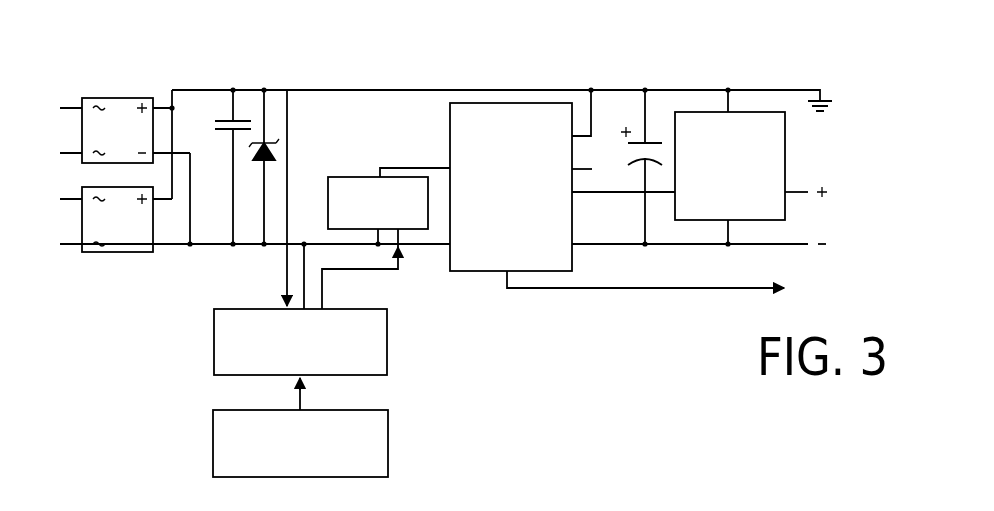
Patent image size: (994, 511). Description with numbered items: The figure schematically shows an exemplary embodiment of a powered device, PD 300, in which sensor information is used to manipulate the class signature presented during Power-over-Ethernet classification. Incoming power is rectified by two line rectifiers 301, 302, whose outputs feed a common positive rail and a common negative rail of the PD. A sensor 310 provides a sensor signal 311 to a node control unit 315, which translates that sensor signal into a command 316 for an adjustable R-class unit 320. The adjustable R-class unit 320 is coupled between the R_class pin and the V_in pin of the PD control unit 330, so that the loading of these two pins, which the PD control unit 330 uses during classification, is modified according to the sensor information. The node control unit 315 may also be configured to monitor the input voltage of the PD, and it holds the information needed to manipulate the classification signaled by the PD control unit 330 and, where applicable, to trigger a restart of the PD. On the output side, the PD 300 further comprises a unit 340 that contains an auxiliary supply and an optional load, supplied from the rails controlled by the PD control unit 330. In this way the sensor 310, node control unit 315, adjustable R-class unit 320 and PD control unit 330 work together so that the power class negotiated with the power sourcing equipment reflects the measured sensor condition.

The powered device 300 is at (298, 63).
The line rectifier 301 is at (108, 98).
The line rectifier 302 is at (110, 255).
The sensor 310 is at (388, 443).
The sensor signal 311 is at (302, 399).
The node control unit 315 is at (387, 352).
The command 316 is at (388, 270).
The adjustable R-class unit 320 is at (350, 177).
The PD control unit 330 is at (488, 272).
The unit comprising an auxiliary supply 340 is at (785, 140).